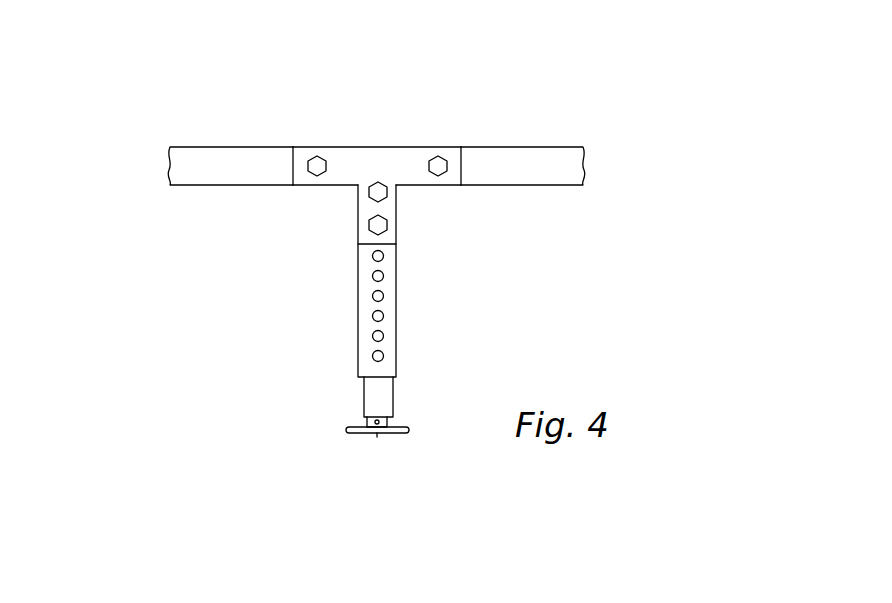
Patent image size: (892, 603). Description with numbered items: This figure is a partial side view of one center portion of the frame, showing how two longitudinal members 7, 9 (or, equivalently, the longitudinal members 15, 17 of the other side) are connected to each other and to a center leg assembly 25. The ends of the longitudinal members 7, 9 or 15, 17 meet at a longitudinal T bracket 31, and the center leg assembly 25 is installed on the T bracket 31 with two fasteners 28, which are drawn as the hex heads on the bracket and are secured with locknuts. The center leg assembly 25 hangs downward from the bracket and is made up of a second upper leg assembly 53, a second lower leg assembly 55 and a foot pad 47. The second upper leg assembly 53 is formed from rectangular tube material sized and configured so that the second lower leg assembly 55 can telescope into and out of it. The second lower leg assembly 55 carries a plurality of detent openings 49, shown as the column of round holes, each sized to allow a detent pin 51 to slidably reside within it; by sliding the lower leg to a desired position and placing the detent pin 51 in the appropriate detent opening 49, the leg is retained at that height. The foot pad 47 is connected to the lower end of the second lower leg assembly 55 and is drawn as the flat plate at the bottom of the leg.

The longitudinal member 7 is at (218, 147).
The longitudinal member 9 is at (205, 107).
The longitudinal member 15 is at (533, 145).
The longitudinal member 17 is at (555, 107).
The center leg assembly 25 is at (187, 293).
The fasteners 28 is at (317, 147).
The longitudinal T bracket 31 is at (378, 160).
The foot pad 47 is at (377, 436).
The detent openings 49 is at (385, 317).
The detent pin 51 is at (385, 257).
The second upper leg assembly 53 is at (358, 312).
The second lower leg assembly 55 is at (362, 397).